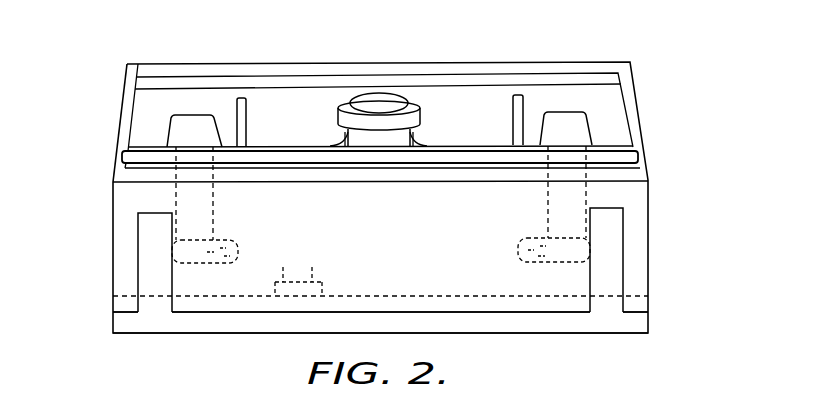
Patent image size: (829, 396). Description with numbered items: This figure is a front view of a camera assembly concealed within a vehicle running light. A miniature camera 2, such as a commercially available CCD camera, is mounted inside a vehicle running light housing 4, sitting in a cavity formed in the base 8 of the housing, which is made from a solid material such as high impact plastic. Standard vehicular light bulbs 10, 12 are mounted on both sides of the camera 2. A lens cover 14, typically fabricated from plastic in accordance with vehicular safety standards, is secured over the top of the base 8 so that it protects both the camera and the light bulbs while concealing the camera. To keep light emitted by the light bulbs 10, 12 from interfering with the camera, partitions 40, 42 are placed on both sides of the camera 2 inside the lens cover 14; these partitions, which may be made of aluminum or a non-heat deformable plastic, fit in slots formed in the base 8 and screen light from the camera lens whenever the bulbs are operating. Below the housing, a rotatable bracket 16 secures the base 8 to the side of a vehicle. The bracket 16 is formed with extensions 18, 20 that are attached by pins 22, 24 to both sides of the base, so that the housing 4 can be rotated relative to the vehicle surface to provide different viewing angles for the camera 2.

The miniature camera 2 is at (420, 117).
The vehicle running light housing 4 is at (684, 55).
The base 8 is at (133, 198).
The light bulb 10 is at (557, 125).
The light bulb 12 is at (188, 135).
The lens cover 14 is at (196, 69).
The rotatable bracket 16 is at (640, 322).
The extension 18 is at (607, 255).
The extension 20 is at (147, 263).
The pin 22 is at (528, 252).
The pin 24 is at (243, 240).
The partition 40 is at (513, 115).
The partition 42 is at (247, 117).